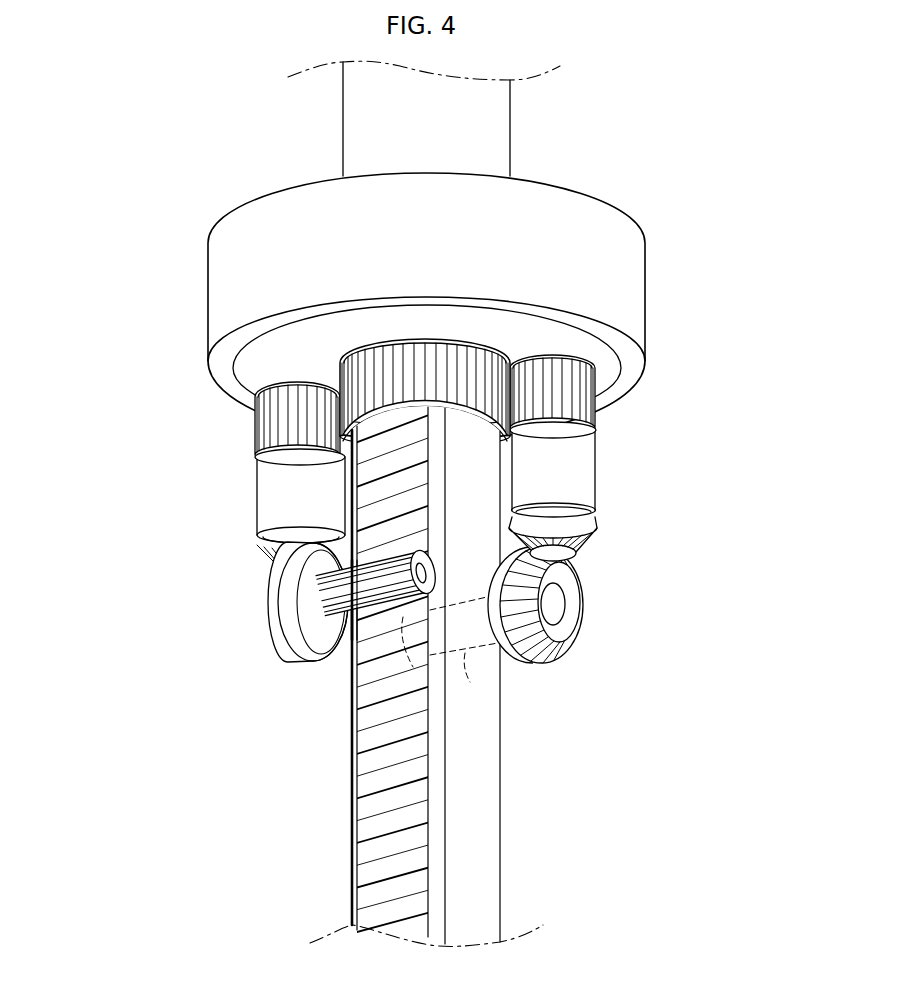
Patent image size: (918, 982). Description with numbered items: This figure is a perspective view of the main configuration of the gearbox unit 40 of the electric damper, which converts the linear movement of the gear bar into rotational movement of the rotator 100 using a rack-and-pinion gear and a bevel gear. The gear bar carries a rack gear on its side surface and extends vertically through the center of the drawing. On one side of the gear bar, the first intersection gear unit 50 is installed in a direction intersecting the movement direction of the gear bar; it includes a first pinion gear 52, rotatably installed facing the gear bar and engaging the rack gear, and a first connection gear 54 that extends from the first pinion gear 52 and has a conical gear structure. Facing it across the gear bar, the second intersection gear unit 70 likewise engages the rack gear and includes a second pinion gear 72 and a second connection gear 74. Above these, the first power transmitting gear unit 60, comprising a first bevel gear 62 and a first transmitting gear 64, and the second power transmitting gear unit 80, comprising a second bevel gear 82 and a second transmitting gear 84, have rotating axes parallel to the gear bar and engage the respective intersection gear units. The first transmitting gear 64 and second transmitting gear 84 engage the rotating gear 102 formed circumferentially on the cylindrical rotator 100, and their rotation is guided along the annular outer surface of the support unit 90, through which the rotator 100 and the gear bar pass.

The gearbox unit 40 is at (214, 606).
The first intersection gear unit 50 is at (283, 655).
The first pinion gear 52 is at (372, 593).
The first connection gear 54 is at (272, 615).
The first power transmitting gear unit 60 is at (133, 457).
The first bevel gear 62 is at (262, 553).
The first transmitting gear 64 is at (273, 425).
The second intersection gear unit 70 is at (599, 624).
The second pinion gear 72 is at (467, 652).
The second connection gear 74 is at (572, 653).
The second power transmitting gear unit 80 is at (717, 448).
The second bevel gear 82 is at (593, 543).
The second transmitting gear 84 is at (573, 405).
The support unit 90 is at (626, 282).
The rotator 100 is at (492, 127).
The rotating gear 102 is at (397, 362).